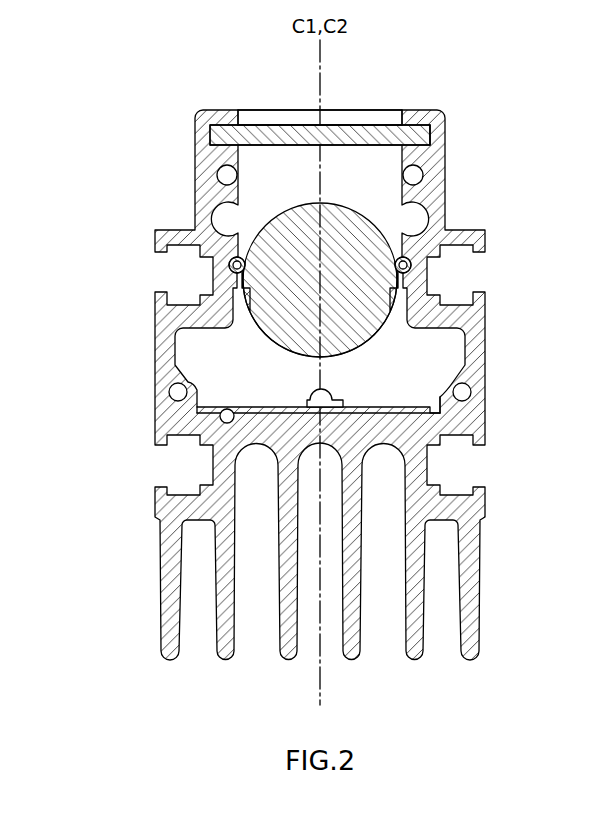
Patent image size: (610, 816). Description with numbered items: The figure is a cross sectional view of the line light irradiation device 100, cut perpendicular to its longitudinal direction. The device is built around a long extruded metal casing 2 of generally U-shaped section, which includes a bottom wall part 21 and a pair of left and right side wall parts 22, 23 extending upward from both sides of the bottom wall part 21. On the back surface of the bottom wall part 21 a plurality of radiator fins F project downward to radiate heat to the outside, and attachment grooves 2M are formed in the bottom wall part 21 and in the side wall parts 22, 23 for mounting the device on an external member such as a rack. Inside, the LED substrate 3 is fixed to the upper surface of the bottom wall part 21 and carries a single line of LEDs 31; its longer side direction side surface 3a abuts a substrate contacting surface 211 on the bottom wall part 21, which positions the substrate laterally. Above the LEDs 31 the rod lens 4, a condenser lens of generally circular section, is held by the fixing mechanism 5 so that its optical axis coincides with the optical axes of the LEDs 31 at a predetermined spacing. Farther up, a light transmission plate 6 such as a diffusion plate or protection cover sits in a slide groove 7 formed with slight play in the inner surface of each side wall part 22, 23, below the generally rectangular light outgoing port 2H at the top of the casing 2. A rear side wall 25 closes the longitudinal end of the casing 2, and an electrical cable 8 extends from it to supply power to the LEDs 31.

The line light irradiation device 100 is at (122, 96).
The casing 2 is at (422, 110).
The light outgoing port 2H is at (256, 106).
The attachment grooves 2M is at (176, 273).
The LED substrate 3 is at (288, 407).
The longer side direction side surface 3a is at (220, 412).
The rod lens 4 is at (330, 203).
The fixing mechanism 5 is at (228, 257).
The light transmission plate 6 is at (300, 125).
The slide groove 7 is at (432, 135).
The electrical cable 8 is at (210, 135).
The bottom wall part 21 is at (426, 410).
The left side wall part 22 is at (155, 350).
The right side wall part 23 is at (485, 350).
The rear side wall 25 is at (352, 110).
The LEDs 31 is at (333, 397).
The substrate contacting surface 211 is at (228, 406).
The radiator fins F is at (172, 663).